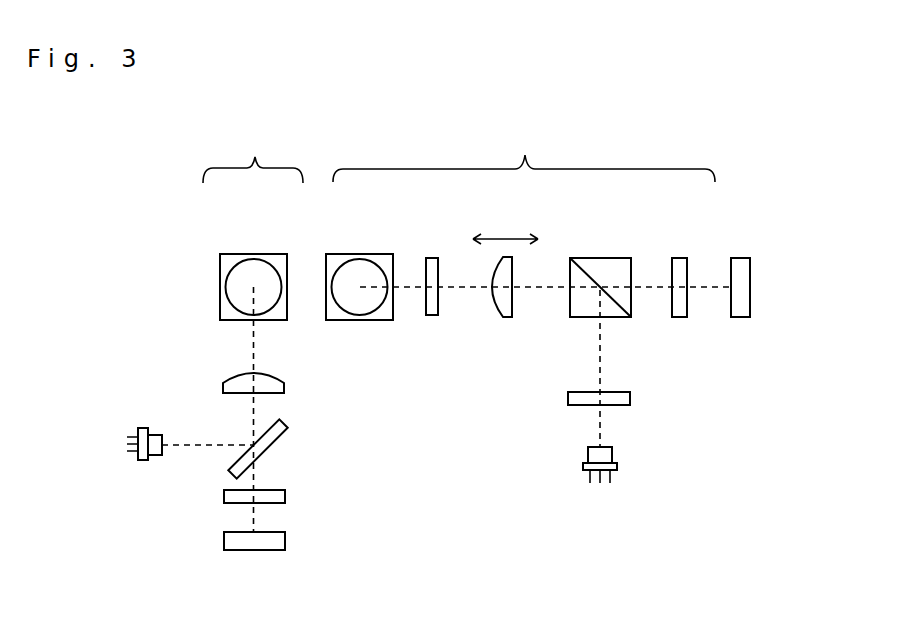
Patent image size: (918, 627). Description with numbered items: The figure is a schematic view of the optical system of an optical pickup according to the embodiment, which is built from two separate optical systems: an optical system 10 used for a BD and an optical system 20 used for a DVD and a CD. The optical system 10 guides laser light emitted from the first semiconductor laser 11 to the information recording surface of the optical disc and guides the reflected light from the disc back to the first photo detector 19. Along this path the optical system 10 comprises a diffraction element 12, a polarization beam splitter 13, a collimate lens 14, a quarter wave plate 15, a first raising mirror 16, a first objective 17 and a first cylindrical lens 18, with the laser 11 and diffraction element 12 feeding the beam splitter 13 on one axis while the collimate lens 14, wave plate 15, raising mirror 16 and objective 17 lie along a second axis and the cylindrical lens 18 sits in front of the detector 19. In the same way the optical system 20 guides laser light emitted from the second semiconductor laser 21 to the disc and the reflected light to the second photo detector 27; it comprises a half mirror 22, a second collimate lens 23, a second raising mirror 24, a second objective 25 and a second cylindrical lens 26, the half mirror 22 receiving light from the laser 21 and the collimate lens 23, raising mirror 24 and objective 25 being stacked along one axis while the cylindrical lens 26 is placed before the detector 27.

The optical system used for a BD 10 is at (524, 153).
The first semiconductor laser 11 is at (583, 466).
The diffraction element 12 is at (630, 400).
The polarization beam splitter 13 is at (577, 258).
The collimate lens 14 is at (503, 318).
The quarter wave plate 15 is at (431, 318).
The first raising mirror 16 is at (378, 322).
The first objective 17 is at (360, 262).
The first cylindrical lens 18 is at (680, 258).
The first photo detector 19 is at (744, 318).
The optical system used for a DVD and a CD 20 is at (253, 154).
The second semiconductor laser 21 is at (142, 462).
The half mirror 22 is at (278, 443).
The second collimate lens 23 is at (225, 381).
The second raising mirror 24 is at (220, 306).
The second objective 25 is at (250, 263).
The second cylindrical lens 26 is at (286, 497).
The second photo detector 27 is at (265, 552).